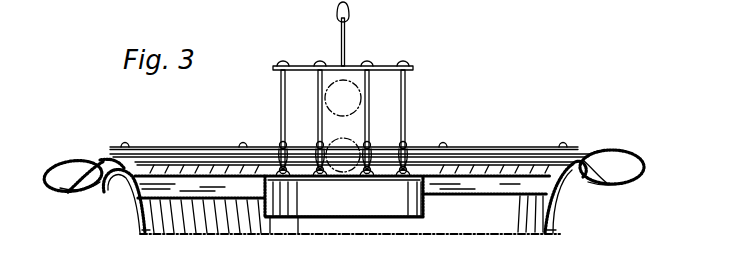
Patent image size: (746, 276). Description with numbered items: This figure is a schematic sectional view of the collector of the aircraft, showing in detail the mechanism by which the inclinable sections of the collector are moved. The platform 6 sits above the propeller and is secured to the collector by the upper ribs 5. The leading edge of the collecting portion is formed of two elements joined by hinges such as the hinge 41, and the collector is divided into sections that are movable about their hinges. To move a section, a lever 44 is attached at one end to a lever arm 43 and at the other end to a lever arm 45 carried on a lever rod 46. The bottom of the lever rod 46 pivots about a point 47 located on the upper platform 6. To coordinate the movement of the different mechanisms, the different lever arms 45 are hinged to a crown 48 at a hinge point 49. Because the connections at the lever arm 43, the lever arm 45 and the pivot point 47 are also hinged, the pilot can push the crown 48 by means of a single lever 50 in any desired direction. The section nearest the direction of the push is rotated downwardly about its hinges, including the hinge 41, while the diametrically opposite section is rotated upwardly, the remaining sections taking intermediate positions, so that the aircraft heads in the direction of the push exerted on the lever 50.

The hinge 41 is at (90, 158).
The lever arm 43 is at (125, 146).
The lever 44 is at (190, 148).
The lever arm 45 is at (280, 143).
The lever rod 46 is at (281, 82).
The pivot point 47 is at (286, 173).
The crown 48 is at (300, 66).
The hinge point on crown 49 is at (282, 63).
The lever 50 is at (346, 33).
The upper ribs 5 is at (200, 188).
The platform 6 is at (340, 177).